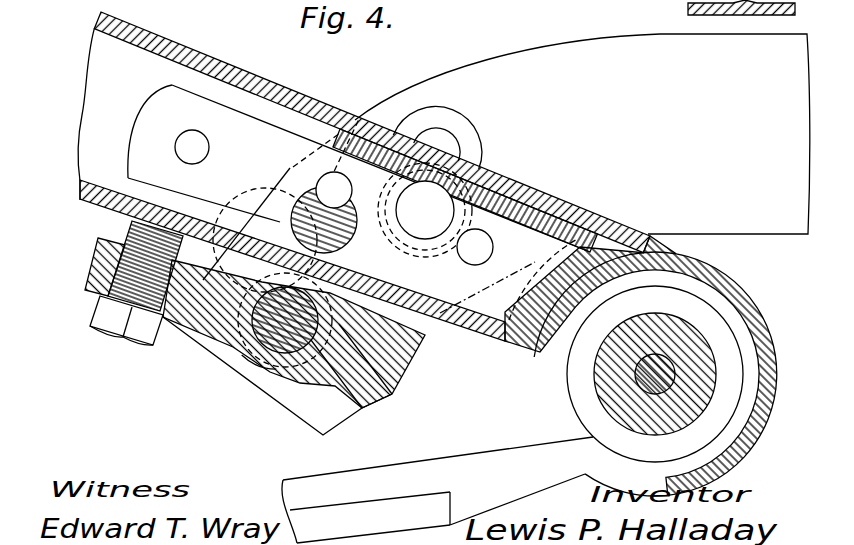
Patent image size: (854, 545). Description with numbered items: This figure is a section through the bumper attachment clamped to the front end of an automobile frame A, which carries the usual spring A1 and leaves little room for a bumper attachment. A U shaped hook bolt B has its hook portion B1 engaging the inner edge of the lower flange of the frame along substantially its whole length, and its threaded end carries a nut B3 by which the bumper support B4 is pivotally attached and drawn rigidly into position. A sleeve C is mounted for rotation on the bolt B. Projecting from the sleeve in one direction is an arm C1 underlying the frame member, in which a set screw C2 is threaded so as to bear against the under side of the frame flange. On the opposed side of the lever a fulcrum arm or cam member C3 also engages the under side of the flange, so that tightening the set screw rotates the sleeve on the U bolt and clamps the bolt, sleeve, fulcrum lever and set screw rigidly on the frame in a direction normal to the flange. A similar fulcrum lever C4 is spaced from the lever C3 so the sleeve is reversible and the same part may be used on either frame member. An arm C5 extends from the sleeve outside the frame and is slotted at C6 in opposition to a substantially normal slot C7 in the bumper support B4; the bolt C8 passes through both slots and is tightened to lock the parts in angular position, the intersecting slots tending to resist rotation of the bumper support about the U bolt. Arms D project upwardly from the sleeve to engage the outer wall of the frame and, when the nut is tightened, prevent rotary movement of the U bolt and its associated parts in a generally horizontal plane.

The front end of automobile frame A is at (137, 70).
The spring A1 is at (473, 457).
The U shaped hook bolt B is at (255, 355).
The U or hook portion B1 is at (292, 176).
The nut B3 is at (267, 380).
The bumper support B4 is at (568, 62).
The sleeve C is at (222, 350).
The arm C1 is at (97, 256).
The set screw C2 is at (113, 322).
The fulcrum arm or cam member C3 is at (422, 318).
The fulcrum lever C4 is at (392, 387).
The arm C5 is at (462, 133).
The slot C6 is at (428, 137).
The slot C7 is at (363, 123).
The bolt C8 is at (494, 244).
The arms D is at (237, 203).